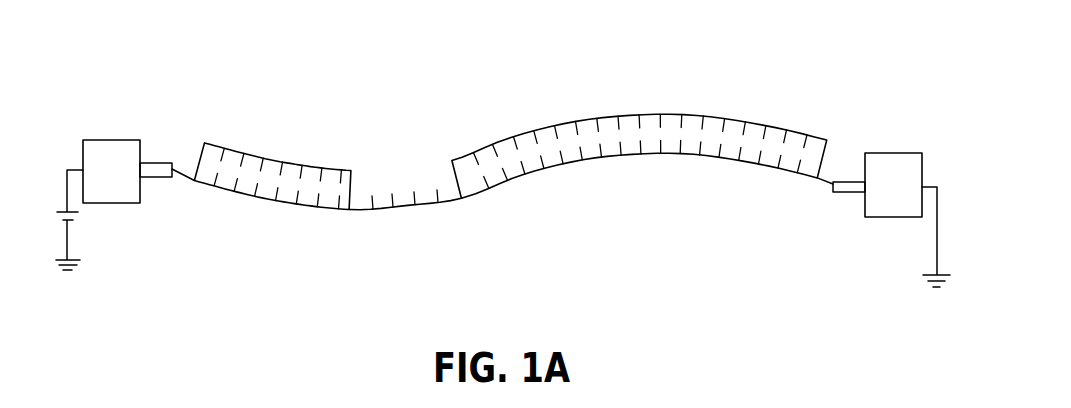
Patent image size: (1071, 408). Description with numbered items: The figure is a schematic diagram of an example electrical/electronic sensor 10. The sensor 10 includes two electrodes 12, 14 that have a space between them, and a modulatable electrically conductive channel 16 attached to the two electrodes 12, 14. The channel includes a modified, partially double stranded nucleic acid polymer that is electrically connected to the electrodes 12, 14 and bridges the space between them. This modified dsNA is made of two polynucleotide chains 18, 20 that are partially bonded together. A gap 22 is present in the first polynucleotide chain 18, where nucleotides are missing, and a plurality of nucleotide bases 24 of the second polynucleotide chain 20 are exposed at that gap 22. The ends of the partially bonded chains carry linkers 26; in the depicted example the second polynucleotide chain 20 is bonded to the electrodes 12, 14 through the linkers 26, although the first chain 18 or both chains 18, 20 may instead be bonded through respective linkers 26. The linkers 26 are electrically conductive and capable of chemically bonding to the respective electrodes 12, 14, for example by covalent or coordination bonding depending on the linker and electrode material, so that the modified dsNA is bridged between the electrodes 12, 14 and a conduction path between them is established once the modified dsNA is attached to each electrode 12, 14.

The sensor 10 is at (781, 86).
The electrode 12 is at (106, 152).
The electrode 14 is at (891, 168).
The modulatable electrically conductive channel 16 is at (264, 210).
The first polynucleotide chain 18 is at (670, 113).
The second polynucleotide chain 20 is at (473, 202).
The gap 22 is at (448, 162).
The nucleotide bases 24 is at (406, 204).
The linker 26 is at (155, 178).